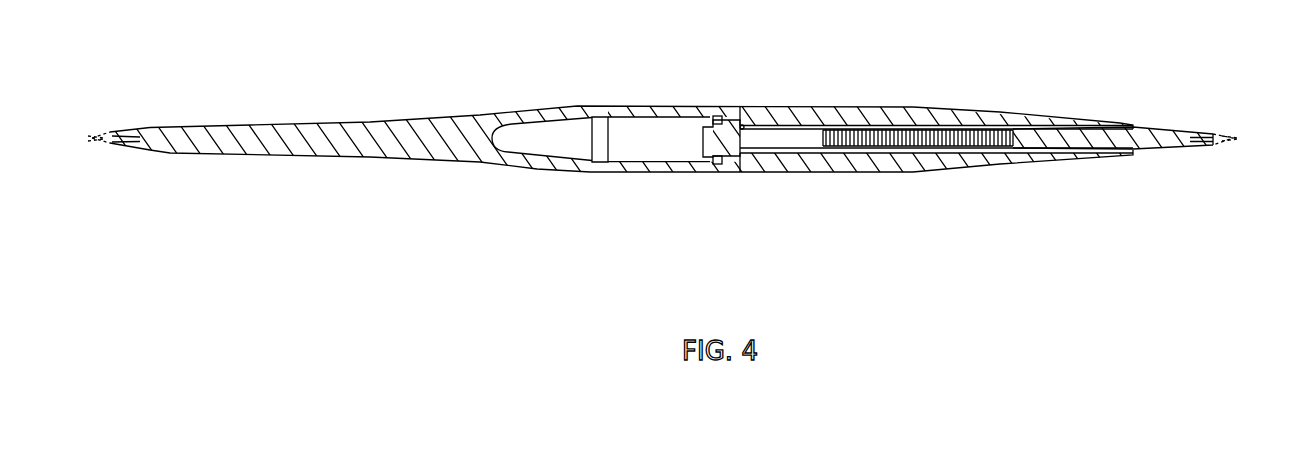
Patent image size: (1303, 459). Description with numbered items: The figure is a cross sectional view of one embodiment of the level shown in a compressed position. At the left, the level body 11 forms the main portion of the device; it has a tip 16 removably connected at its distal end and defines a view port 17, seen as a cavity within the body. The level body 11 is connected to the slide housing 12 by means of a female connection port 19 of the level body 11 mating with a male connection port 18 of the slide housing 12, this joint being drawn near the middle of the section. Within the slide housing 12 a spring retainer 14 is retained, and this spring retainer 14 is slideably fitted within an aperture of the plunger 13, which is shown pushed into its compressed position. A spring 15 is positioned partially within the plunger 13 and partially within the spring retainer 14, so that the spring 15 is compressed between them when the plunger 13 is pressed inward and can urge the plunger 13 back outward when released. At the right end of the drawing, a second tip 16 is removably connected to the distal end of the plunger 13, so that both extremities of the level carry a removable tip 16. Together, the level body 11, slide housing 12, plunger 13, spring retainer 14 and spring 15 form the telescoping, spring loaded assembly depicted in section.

The level body 11 is at (390, 122).
The slide housing 12 is at (940, 108).
The plunger 13 is at (1163, 125).
The spring retainer 14 is at (797, 133).
The spring 15 is at (910, 147).
The tip 16 is at (105, 133).
The view port 17 is at (548, 147).
The male connection port 18 is at (735, 168).
The female connection port 19 is at (740, 125).